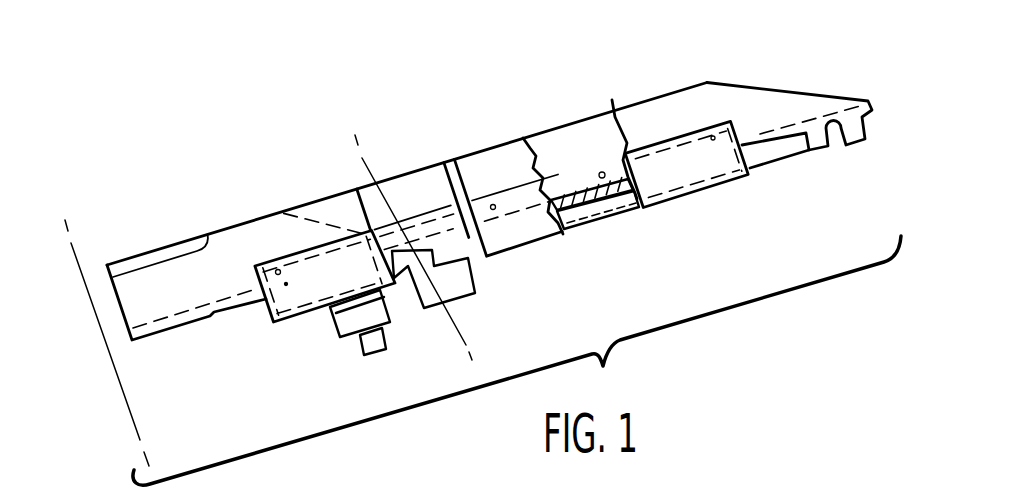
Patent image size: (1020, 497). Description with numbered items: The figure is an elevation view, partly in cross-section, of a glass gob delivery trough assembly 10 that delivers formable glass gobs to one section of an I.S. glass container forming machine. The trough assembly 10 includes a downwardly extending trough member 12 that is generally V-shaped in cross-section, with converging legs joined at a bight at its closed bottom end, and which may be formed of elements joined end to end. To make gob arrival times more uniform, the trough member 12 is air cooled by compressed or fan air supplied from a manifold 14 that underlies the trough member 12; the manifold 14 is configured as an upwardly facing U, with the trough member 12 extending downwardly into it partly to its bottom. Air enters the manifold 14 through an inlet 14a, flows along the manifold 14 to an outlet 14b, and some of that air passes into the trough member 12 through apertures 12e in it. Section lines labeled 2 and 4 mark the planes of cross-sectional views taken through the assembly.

The glass gob delivery trough assembly 10 is at (733, 212).
The trough member 12 is at (763, 88).
The apertures 12e is at (277, 271).
The manifold 14 is at (608, 218).
The inlet 14a is at (332, 323).
The outlet 14b is at (478, 273).
The section line 2- 2 is at (53, 260).
The section line 4- 4 is at (338, 175).